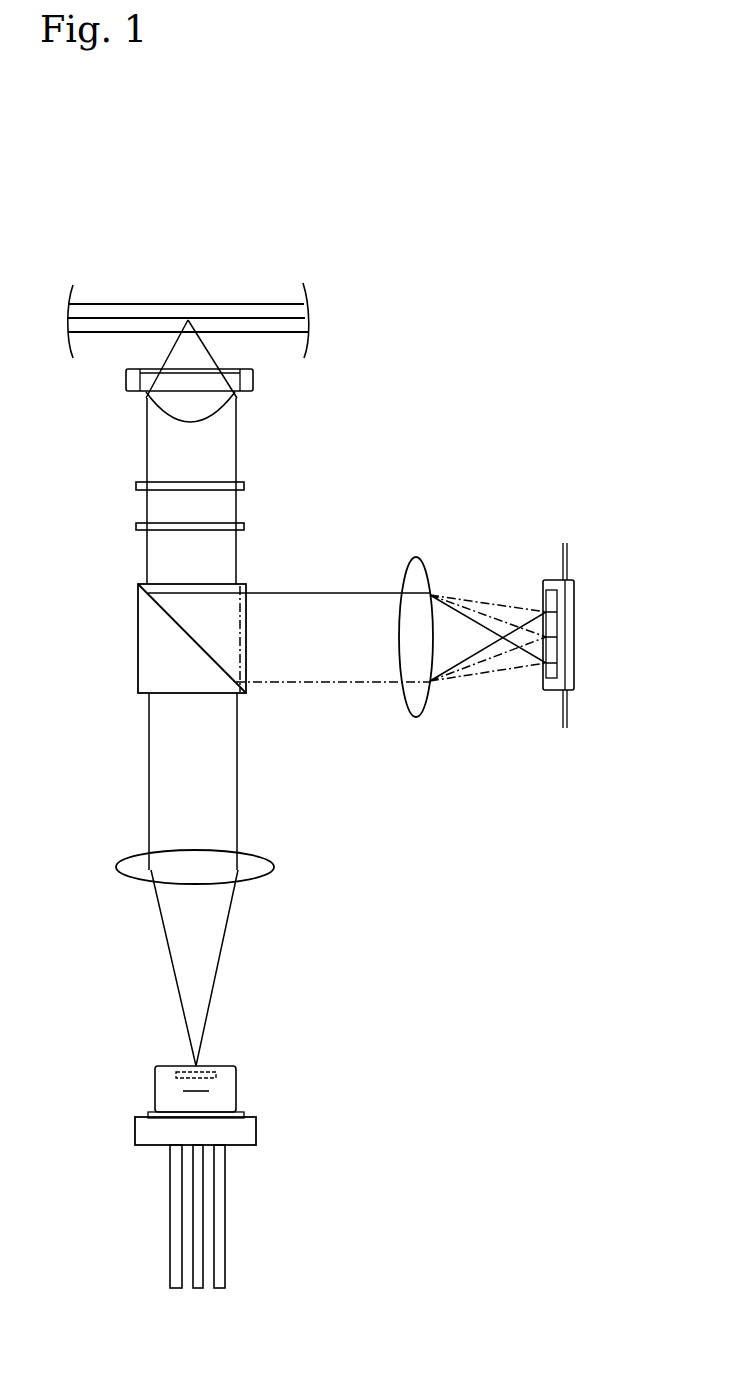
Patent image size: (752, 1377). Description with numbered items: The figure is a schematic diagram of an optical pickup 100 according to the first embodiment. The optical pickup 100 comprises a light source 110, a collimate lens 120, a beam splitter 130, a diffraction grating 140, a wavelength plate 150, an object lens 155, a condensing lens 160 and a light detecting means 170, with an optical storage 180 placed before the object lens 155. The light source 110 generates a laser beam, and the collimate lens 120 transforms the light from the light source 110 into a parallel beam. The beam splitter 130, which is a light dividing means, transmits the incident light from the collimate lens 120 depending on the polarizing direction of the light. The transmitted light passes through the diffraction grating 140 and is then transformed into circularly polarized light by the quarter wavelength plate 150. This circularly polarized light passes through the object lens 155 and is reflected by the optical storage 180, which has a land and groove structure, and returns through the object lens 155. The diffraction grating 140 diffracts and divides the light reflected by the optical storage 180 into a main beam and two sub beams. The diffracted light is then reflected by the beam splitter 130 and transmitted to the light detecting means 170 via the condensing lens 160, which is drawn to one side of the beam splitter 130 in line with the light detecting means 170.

The optical pickup 100 is at (333, 231).
The light source 110 is at (237, 1088).
The collimate lens 120 is at (274, 865).
The beam splitter 130 is at (137, 639).
The diffraction grating 140 is at (244, 527).
The wavelength plate 150 is at (244, 486).
The object lens 155 is at (253, 380).
The condensing lens 160 is at (414, 557).
The light detecting means 170 is at (574, 634).
The optical storage 180 is at (251, 301).